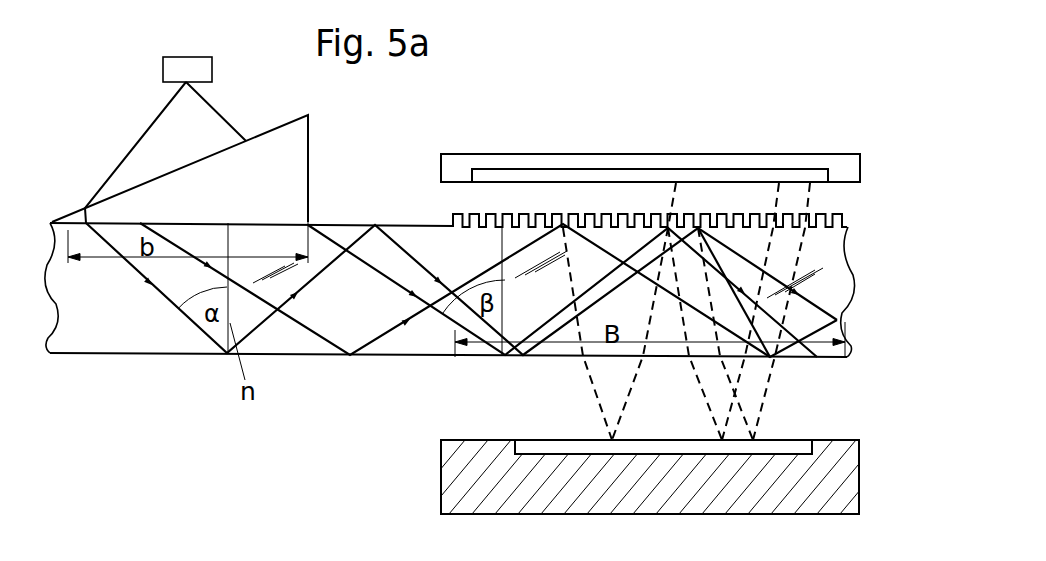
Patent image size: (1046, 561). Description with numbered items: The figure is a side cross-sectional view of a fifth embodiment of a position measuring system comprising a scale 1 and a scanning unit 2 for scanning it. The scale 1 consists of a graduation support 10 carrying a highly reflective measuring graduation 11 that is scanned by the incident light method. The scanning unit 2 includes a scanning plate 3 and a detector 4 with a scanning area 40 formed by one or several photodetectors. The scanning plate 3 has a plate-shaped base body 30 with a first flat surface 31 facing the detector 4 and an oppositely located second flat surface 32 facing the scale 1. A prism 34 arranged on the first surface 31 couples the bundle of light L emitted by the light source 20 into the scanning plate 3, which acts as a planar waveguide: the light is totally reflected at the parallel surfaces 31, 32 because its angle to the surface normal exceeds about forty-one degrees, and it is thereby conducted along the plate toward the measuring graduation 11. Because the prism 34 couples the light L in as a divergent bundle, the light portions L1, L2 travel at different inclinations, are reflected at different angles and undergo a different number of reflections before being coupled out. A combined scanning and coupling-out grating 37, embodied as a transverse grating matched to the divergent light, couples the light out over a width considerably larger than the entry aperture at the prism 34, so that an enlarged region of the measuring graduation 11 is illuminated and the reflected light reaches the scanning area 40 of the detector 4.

The scale 1 is at (635, 458).
The scanning unit 2 is at (852, 203).
The scanning plate 3 is at (467, 297).
The detector 4 is at (645, 154).
The graduation support 10 is at (460, 480).
The measuring graduation 11 is at (783, 447).
The light source 20 is at (203, 62).
The base body 30 is at (75, 308).
The first flat surface 31 is at (52, 218).
The second flat surface 32 is at (95, 357).
The prism 34 is at (310, 145).
The combined scanning and coupling-out grating 37 is at (500, 228).
The scanning area 40 is at (710, 177).
The bundle of light L is at (140, 135).
The first light portion L1 is at (708, 408).
The second light portion L2 is at (770, 388).